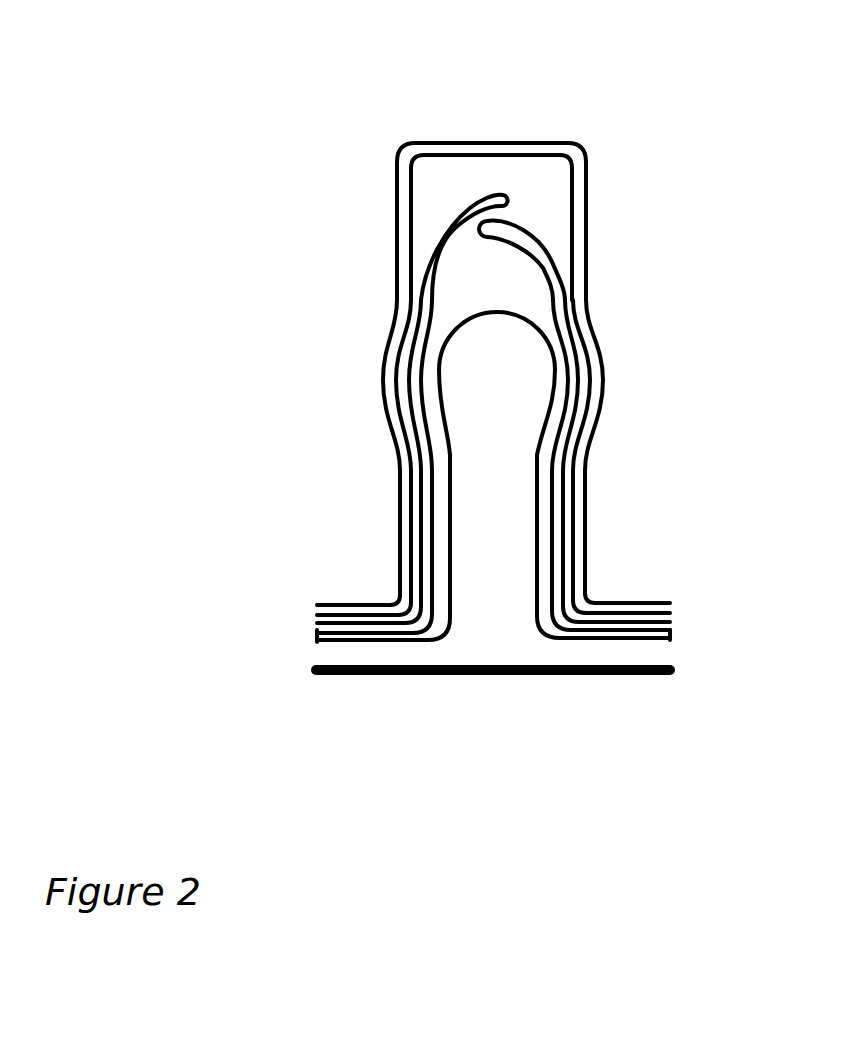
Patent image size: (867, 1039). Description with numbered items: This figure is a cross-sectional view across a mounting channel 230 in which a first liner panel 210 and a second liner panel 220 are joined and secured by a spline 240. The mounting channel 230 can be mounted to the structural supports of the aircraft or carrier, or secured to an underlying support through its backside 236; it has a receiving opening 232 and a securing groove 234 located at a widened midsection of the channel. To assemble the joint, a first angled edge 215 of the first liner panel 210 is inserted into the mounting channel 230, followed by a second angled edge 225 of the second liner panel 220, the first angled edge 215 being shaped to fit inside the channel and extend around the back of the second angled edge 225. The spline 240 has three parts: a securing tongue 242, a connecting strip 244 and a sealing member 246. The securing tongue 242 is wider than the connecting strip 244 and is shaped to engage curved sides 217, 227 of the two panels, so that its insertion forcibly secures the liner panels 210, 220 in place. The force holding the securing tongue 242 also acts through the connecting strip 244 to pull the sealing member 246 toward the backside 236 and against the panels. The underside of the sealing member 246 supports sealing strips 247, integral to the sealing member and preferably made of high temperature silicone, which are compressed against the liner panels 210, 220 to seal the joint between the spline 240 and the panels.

The first liner panel 210 is at (317, 616).
The first angled edge 215 is at (433, 230).
The curved side 217 is at (386, 347).
The second liner panel 220 is at (670, 618).
The second angled edge 225 is at (567, 251).
The curved side 227 is at (597, 343).
The mounting channel 230 is at (493, 314).
The receiving opening 232 is at (405, 590).
The securing groove 234 is at (378, 385).
The backside 236 is at (517, 143).
The spline 240 is at (501, 690).
The securing tongue 242 is at (518, 376).
The connecting strip 244 is at (520, 486).
The sealing member 246 is at (568, 660).
The sealing strips 247 is at (318, 634).